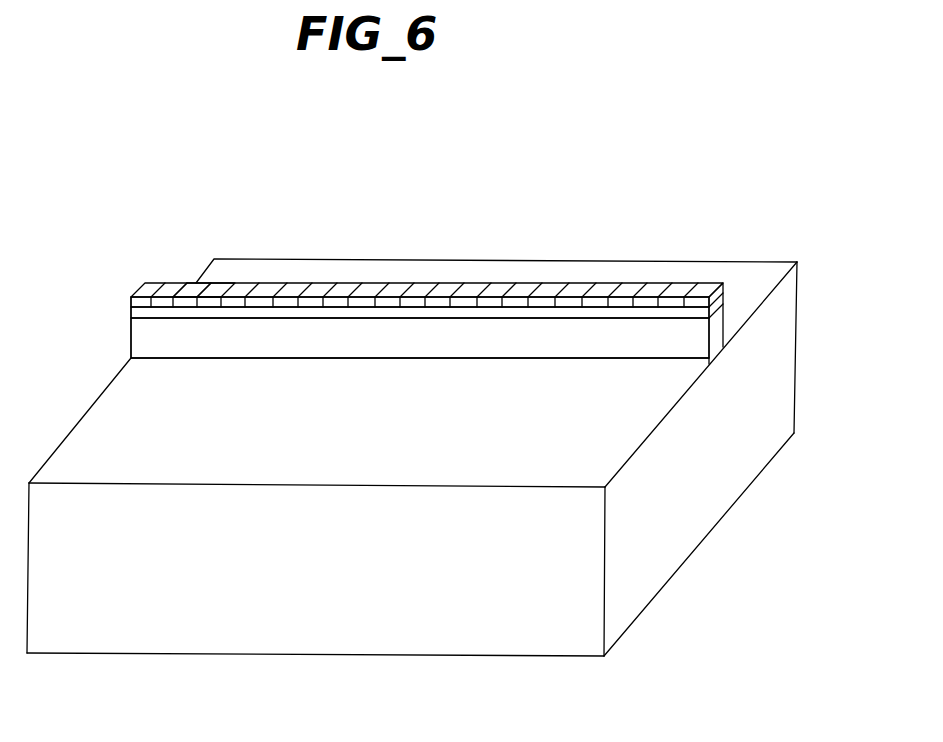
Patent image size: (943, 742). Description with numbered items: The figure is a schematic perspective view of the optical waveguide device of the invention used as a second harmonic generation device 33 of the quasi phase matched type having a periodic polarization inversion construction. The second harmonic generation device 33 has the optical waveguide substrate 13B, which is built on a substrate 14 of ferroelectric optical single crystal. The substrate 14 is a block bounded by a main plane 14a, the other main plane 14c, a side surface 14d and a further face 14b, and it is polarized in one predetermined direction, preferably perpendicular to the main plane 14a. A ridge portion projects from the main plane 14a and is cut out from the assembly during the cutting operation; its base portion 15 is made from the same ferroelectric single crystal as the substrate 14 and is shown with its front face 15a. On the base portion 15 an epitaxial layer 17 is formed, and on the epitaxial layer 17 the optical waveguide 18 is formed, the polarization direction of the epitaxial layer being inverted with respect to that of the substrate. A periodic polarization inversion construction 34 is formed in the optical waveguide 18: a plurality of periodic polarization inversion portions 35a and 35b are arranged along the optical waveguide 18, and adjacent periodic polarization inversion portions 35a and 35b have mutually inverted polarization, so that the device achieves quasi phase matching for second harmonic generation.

The optical waveguide substrate 13B is at (803, 327).
The substrate 14 is at (451, 460).
The main plane 14a is at (690, 270).
The front surface of substrate 14b is at (492, 595).
The other main plane 14c is at (573, 658).
The side surface 14d is at (719, 476).
The base portion 15 is at (427, 308).
The lower layer of layered structure 15a is at (608, 348).
The epitaxial layer 17 is at (533, 318).
The optical waveguide 18 is at (495, 287).
The second harmonic generation device 33 is at (451, 430).
The periodic polarization inversion construction 34 is at (427, 255).
The periodic polarization inversion portion 35a is at (219, 287).
The periodic polarization inversion portion 35b is at (196, 287).